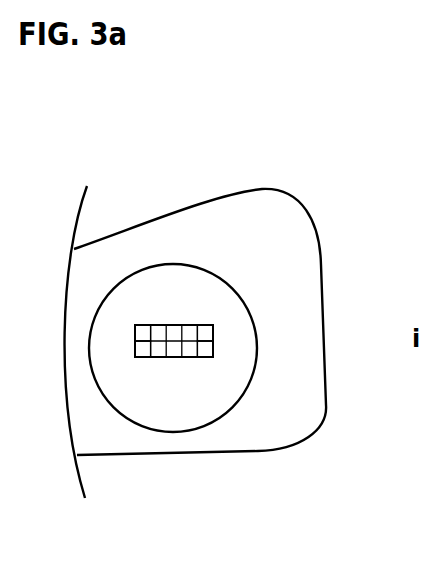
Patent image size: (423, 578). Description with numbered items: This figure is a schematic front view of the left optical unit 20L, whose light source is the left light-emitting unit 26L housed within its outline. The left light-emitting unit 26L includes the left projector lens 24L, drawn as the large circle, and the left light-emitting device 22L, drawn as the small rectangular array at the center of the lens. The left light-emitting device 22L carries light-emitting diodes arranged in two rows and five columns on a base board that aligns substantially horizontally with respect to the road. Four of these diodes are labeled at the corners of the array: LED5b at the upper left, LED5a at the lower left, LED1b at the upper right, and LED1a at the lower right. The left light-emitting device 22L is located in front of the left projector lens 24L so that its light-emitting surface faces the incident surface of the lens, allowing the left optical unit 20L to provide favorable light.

The left optical unit 20L is at (313, 205).
The left light-emitting device 22L is at (213, 348).
The left projector lens 24L is at (190, 433).
The left light-emitting unit 26L is at (199, 248).
The element LED5b is at (143, 338).
The element LED5a is at (142, 350).
The element LED1b is at (205, 334).
The element LED1a is at (205, 350).